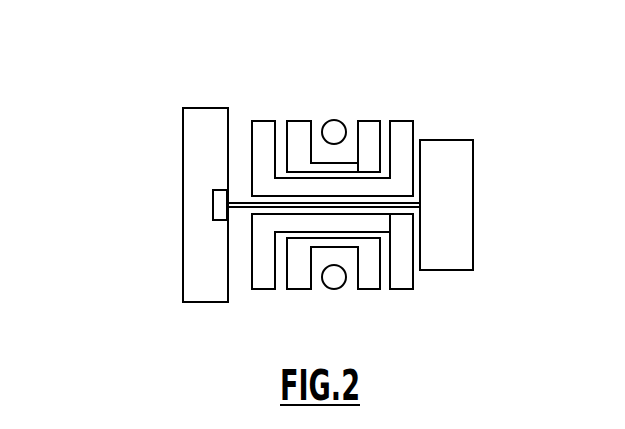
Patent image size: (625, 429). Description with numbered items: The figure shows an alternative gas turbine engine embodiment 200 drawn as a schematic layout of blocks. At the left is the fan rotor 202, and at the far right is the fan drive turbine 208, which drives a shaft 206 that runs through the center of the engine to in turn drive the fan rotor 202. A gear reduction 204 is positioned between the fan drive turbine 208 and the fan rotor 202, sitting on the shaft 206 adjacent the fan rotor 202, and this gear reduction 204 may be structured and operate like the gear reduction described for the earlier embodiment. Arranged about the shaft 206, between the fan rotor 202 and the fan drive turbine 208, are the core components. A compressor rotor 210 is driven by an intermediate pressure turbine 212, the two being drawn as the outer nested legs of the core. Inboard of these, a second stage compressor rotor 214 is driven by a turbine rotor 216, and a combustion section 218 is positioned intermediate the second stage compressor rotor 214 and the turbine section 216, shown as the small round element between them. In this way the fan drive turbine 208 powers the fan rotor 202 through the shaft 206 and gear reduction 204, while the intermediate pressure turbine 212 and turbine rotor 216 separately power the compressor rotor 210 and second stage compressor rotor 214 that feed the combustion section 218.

The embodiment 200 is at (134, 80).
The fan rotor 202 is at (193, 153).
The gear reduction 204 is at (215, 216).
The shaft 206 is at (400, 121).
The fan drive turbine 208 is at (460, 186).
The compressor rotor 210 is at (262, 265).
The intermediate pressure turbine 212 is at (403, 289).
The second stage compressor rotor 214 is at (298, 121).
The turbine rotor 216 is at (370, 121).
The combustion section 218 is at (335, 120).